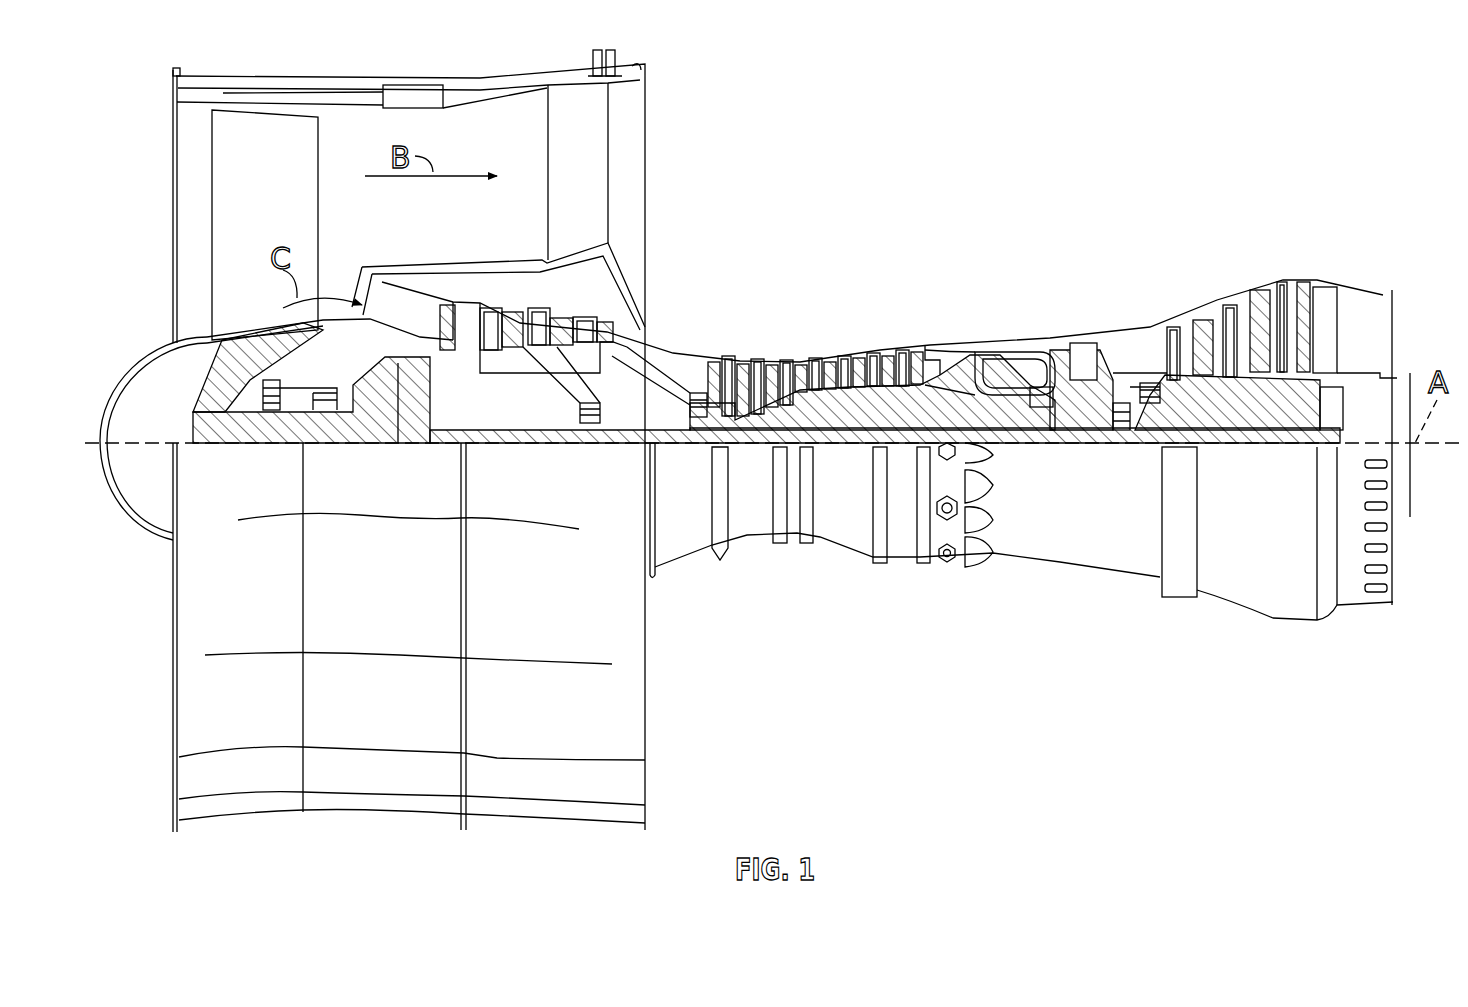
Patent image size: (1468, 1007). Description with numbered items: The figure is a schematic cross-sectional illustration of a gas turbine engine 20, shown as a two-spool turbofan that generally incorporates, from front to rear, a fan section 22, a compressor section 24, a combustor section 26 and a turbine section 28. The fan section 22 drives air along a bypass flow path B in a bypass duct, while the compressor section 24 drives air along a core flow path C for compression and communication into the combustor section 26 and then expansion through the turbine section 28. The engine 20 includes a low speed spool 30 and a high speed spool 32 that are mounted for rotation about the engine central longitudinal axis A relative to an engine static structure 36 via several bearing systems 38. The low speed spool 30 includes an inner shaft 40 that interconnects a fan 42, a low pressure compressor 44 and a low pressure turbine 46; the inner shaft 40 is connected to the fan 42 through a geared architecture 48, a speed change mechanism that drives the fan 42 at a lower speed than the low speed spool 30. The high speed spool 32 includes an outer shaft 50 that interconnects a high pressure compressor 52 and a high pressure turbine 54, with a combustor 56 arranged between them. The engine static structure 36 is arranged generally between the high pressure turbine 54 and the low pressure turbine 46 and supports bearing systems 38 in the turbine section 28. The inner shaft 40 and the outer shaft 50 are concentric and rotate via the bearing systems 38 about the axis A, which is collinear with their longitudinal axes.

The gas turbine engine 20 is at (1215, 112).
The fan section 22 is at (400, 46).
The compressor section 24 is at (832, 308).
The combustor section 26 is at (998, 308).
The turbine section 28 is at (1148, 288).
The low speed spool 30 is at (865, 447).
The high speed spool 32 is at (930, 415).
The engine static structure 36 is at (905, 567).
The bearing systems 38 is at (275, 405).
The inner shaft 40 is at (656, 443).
The fan 42 is at (290, 201).
The low pressure compressor 44 is at (560, 326).
The low pressure turbine 46 is at (1250, 305).
The geared architecture 48 is at (412, 410).
The outer shaft 50 is at (1022, 430).
The high pressure compressor 52 is at (823, 412).
The high pressure turbine 54 is at (1085, 340).
The combustor 56 is at (1006, 366).